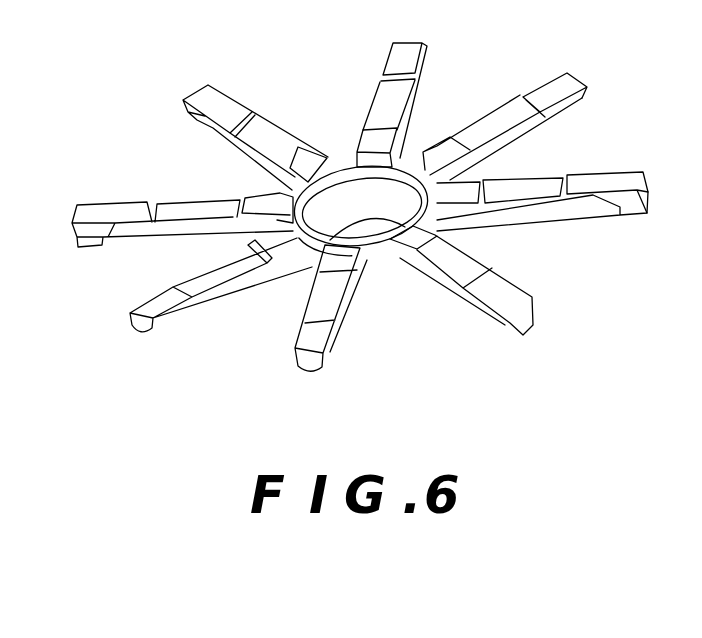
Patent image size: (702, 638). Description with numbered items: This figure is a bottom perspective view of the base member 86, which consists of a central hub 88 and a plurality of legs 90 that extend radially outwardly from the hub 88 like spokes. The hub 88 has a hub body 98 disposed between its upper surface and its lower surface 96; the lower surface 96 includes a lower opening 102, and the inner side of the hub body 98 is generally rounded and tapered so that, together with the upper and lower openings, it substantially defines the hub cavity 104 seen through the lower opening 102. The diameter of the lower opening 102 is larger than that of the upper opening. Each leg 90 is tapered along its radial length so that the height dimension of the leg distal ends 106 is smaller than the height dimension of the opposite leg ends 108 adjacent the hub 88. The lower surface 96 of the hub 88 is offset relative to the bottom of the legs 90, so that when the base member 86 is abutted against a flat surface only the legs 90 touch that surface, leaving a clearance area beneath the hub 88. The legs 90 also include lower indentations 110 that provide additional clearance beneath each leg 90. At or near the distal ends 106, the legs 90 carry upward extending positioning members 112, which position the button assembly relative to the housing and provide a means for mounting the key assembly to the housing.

The base member 86 is at (383, 220).
The hub 88 is at (388, 156).
The legs 90 is at (568, 204).
The lower surface 96 is at (316, 270).
The hub body 98 is at (350, 183).
The lower opening 102 is at (378, 258).
The hub cavity 104 is at (400, 207).
The leg distal ends 106 is at (561, 106).
The opposite leg ends 108 is at (487, 160).
The lower indentations 110 is at (263, 136).
The upward extending positioning members 112 is at (638, 216).